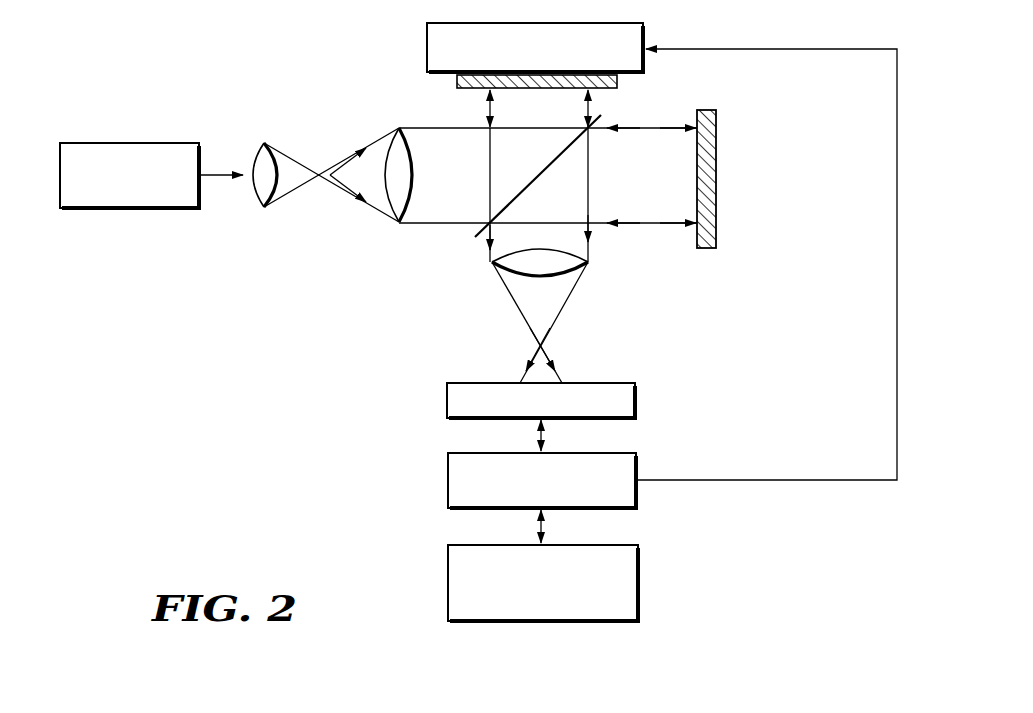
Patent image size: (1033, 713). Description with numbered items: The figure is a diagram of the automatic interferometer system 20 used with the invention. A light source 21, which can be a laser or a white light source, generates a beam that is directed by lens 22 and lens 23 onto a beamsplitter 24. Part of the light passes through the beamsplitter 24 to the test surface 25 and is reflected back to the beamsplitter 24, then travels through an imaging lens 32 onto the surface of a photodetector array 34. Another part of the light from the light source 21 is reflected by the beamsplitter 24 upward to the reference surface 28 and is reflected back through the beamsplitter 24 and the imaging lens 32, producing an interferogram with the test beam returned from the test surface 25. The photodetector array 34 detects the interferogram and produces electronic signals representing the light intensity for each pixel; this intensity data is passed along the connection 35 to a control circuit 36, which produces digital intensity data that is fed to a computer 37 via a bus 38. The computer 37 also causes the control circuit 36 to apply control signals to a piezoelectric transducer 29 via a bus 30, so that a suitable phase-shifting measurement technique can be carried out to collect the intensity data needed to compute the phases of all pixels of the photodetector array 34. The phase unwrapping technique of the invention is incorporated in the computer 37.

The automatic interferometer system 20 is at (350, 472).
The light source 21 is at (190, 122).
The lens 22 is at (255, 195).
The lens 23 is at (413, 176).
The beamsplitter 24 is at (540, 173).
The test surface 25 is at (716, 221).
The reference surface 28 is at (538, 89).
The piezoelectric transducer (PZT) 29 is at (646, 40).
The bus 30 is at (918, 140).
The imaging lens 32 is at (588, 262).
The photodetector array 34 is at (620, 356).
The detector signal line 35 is at (538, 433).
The control circuit 36 is at (598, 431).
The computer 37 is at (588, 545).
The bus 38 is at (540, 520).